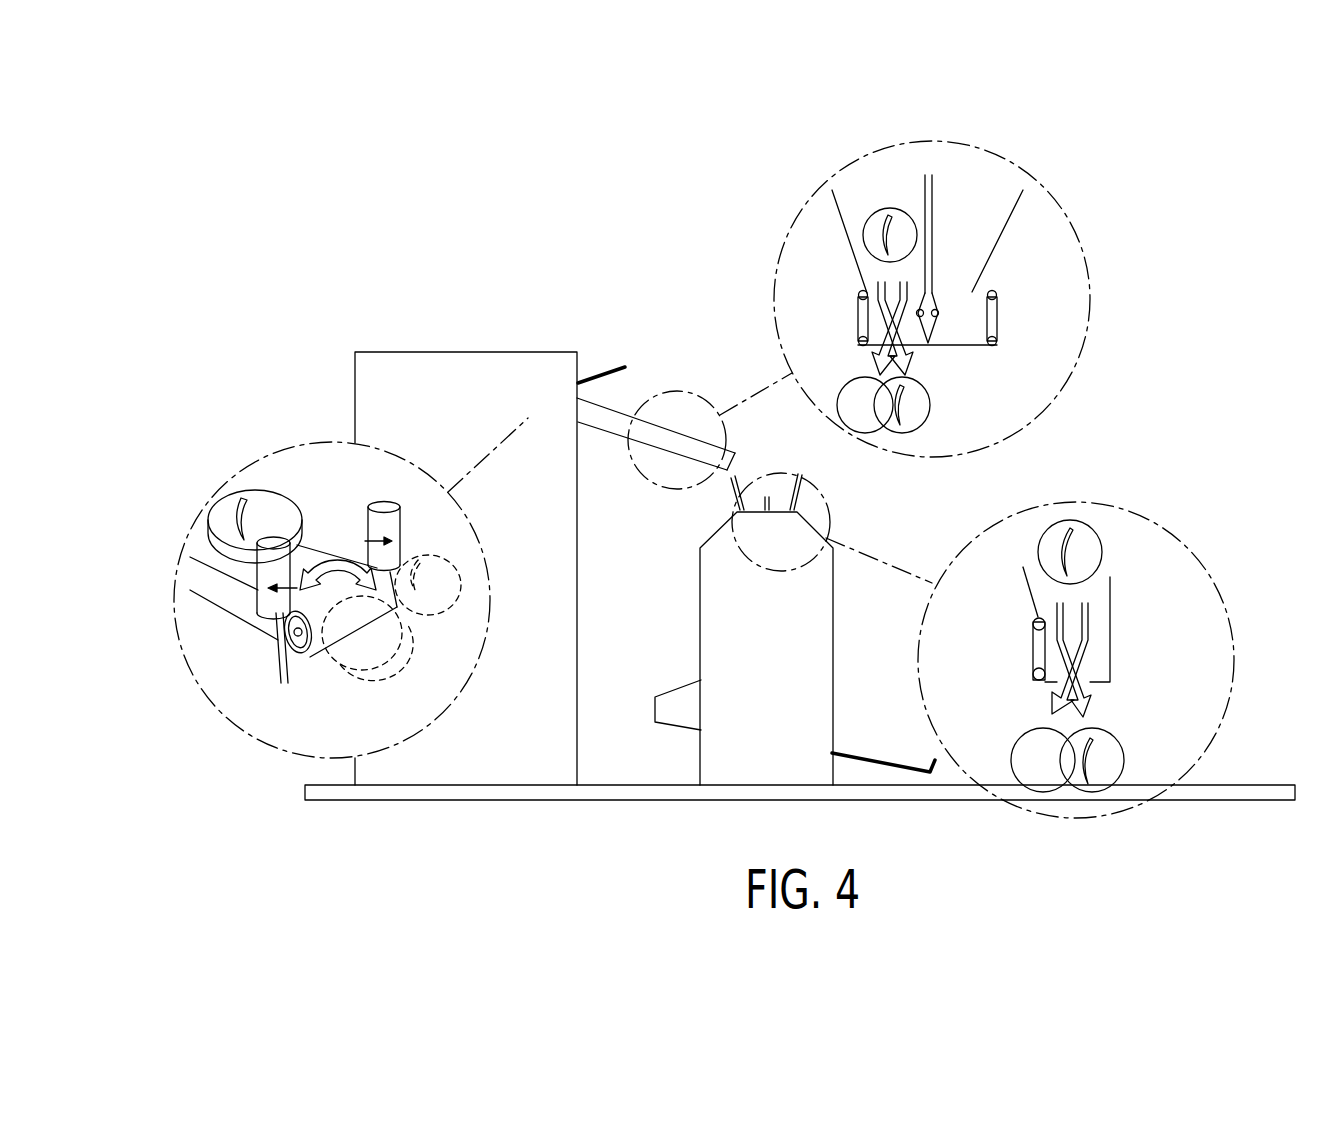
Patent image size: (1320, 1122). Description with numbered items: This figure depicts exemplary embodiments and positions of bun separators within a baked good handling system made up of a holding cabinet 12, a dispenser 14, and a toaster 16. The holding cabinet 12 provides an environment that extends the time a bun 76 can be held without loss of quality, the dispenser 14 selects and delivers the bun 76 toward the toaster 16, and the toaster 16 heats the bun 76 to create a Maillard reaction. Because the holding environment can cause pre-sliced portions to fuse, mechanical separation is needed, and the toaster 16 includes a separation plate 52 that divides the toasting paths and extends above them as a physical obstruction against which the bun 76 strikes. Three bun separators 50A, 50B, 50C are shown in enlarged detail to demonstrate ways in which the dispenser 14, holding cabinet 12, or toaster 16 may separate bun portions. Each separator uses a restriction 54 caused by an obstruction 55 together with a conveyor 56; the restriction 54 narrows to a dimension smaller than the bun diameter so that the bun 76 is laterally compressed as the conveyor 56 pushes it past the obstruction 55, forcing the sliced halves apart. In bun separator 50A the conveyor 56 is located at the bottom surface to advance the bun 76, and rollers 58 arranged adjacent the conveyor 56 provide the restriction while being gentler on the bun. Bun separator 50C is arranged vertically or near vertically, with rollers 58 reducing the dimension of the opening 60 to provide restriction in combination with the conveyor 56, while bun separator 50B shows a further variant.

The holding cabinet 12 is at (441, 372).
The dispenser 14 is at (652, 358).
The toaster 16 is at (732, 620).
The bun separator 50A is at (316, 486).
The bun separator 50B is at (883, 174).
The bun separator 50C is at (1096, 474).
The separation plate 52 is at (767, 497).
The restriction 54 is at (888, 287).
The obstruction 55 is at (930, 304).
The conveyor 56 is at (248, 610).
The rollers 58 is at (257, 577).
The opening 60 is at (1099, 646).
The bun 76 is at (903, 224).